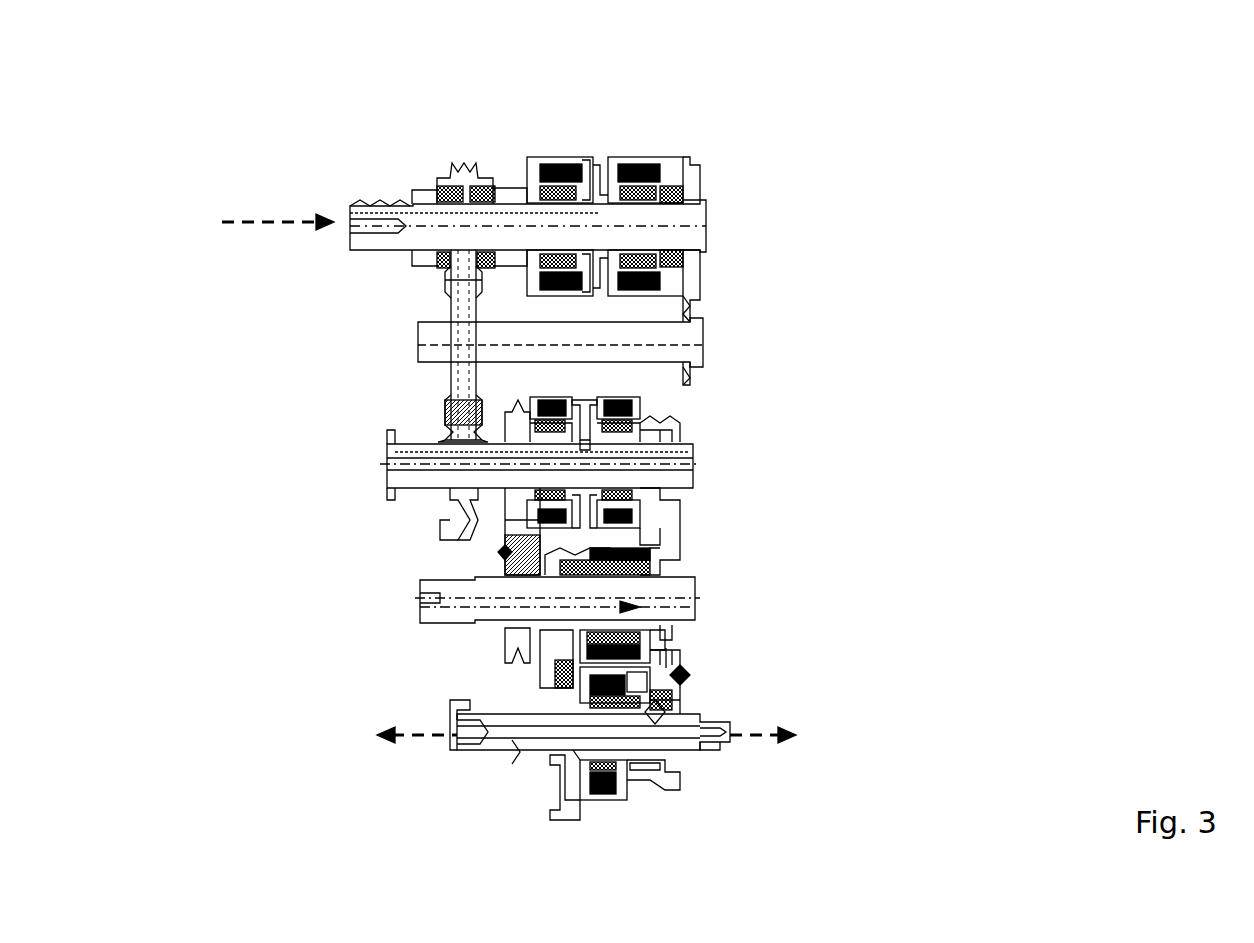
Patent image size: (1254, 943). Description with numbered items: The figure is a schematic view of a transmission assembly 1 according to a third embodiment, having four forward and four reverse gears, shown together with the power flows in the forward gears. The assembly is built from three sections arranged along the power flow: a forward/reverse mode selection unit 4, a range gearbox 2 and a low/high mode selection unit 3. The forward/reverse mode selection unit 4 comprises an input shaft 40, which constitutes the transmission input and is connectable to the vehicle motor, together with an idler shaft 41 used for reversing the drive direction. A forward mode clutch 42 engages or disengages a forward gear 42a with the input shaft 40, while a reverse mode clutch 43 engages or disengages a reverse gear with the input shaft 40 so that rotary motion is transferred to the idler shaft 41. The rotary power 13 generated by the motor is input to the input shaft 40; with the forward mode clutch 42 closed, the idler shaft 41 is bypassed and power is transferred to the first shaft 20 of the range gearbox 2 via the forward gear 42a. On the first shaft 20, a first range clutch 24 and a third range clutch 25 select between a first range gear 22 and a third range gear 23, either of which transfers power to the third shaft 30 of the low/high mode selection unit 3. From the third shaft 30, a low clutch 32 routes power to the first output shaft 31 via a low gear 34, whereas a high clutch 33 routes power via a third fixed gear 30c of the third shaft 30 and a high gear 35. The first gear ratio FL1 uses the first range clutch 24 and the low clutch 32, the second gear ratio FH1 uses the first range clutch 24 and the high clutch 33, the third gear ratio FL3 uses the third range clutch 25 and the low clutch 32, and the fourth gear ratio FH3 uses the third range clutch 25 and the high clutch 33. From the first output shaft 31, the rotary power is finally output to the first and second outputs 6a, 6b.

The transmission assembly 1 is at (824, 138).
The transmission input 13 is at (270, 218).
The range gearbox 2 is at (927, 412).
The low/high mode selection unit 3 is at (926, 584).
The forward/reverse mode selection unit 4 is at (923, 196).
The input shaft 40 is at (690, 222).
The idler shaft 41 is at (705, 346).
The forward mode clutch 42 is at (553, 166).
The forward gear 42a is at (452, 282).
The reverse mode clutch 43 is at (635, 166).
The first shaft 20 is at (700, 460).
The first range gear 22 is at (640, 508).
The third range gear 23 is at (522, 506).
The first range clutch 24 is at (640, 418).
The third range clutch 25 is at (548, 396).
The third shaft 30 is at (680, 586).
The third fixed gear 30c is at (672, 656).
The first output shaft 31 is at (716, 714).
The low clutch 32 is at (655, 646).
The high clutch 33 is at (608, 800).
The low gear 34 is at (556, 650).
The high gear 35 is at (650, 772).
The first output 6a is at (420, 746).
The second output 6b is at (765, 742).
The second gear ratio FH1 is at (612, 456).
The first gear ratio FL1 is at (652, 536).
The fourth gear ratio FH3 is at (506, 548).
The third gear ratio FL3 is at (522, 520).